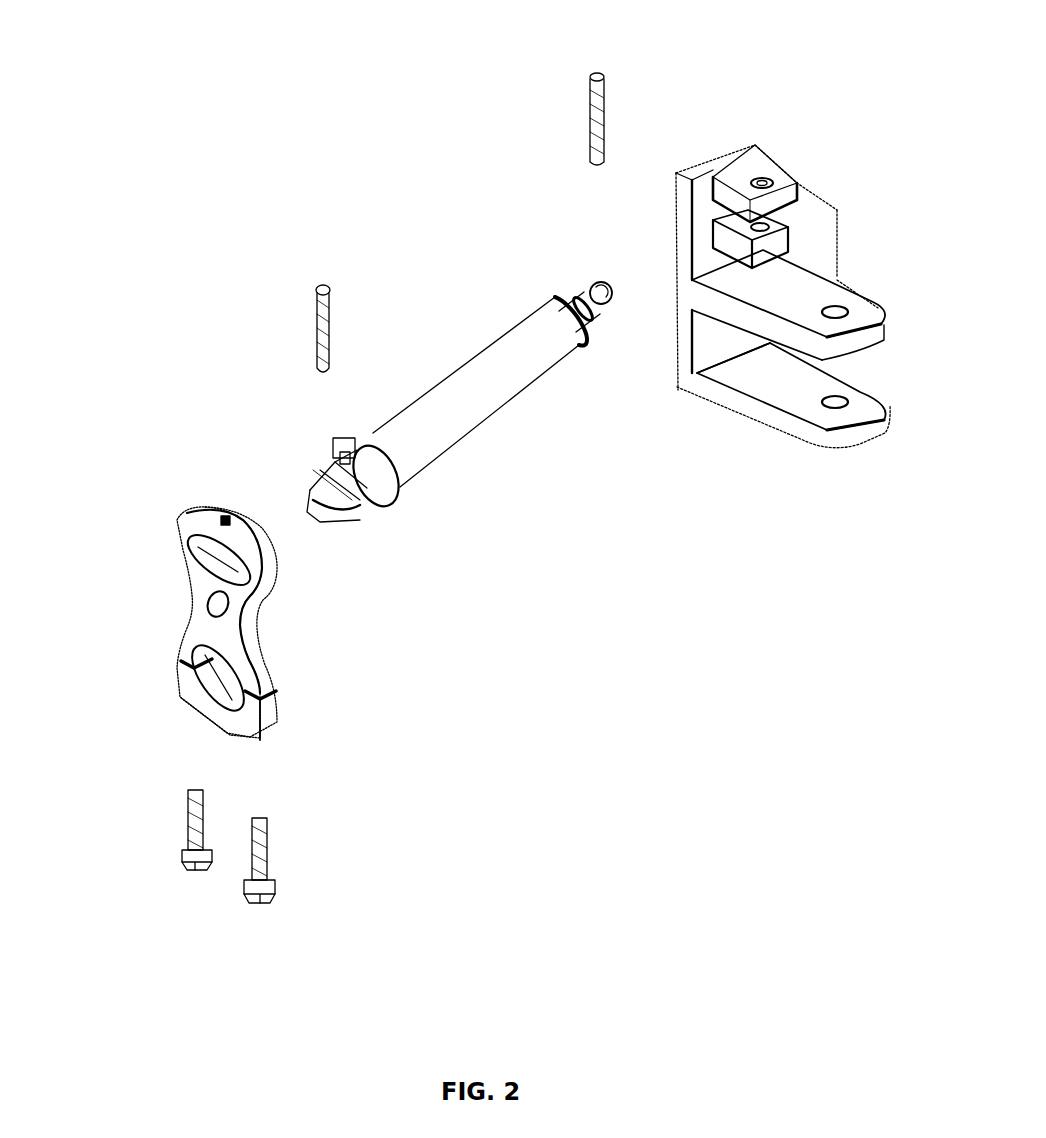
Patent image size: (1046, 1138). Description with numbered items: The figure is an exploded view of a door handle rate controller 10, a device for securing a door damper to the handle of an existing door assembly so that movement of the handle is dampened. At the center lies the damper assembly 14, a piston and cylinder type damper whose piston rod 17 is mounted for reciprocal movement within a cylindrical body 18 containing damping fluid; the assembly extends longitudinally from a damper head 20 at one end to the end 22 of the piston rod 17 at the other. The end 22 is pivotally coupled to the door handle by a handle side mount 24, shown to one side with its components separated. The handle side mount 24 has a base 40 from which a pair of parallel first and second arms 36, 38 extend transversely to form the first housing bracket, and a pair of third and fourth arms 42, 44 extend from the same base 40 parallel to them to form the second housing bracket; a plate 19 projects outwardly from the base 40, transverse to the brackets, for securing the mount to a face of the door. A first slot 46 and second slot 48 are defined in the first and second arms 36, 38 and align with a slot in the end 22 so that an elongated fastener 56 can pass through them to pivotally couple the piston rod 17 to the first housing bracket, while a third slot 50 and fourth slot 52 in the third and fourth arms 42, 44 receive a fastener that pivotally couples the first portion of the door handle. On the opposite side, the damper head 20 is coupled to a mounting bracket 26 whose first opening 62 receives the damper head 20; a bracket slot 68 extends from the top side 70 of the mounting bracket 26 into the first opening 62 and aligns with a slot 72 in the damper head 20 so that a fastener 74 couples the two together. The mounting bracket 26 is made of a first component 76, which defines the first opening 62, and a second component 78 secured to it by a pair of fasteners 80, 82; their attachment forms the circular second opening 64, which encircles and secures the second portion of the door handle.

The door handle rate controller 10 is at (318, 272).
The damper assembly 14 is at (448, 431).
The piston rod 17 is at (588, 294).
The body 18 is at (427, 445).
The plate 19 is at (833, 256).
The damper head 20 is at (333, 473).
The end of the piston rod 22 is at (580, 258).
The handle side mount 24 is at (704, 86).
The mounting bracket 26 is at (157, 504).
The first arm 36 is at (735, 166).
The second arm 38 is at (770, 248).
The base 40 is at (708, 332).
The third arm 42 is at (862, 333).
The fourth arm 44 is at (862, 424).
The first slot 46 is at (770, 185).
The second slot 48 is at (766, 226).
The third slot 50 is at (838, 313).
The fourth slot 52 is at (843, 402).
The elongated fastener 56 is at (583, 101).
The first opening 62 is at (228, 557).
The second opening 64 is at (222, 680).
The bracket slot 68 is at (222, 517).
The top side 70 is at (246, 530).
The slot 72 is at (342, 496).
The fastener 74 is at (322, 348).
The first component 76 is at (228, 617).
The second component 78 is at (245, 710).
The fastener 80 is at (195, 828).
The fastener 82 is at (262, 840).